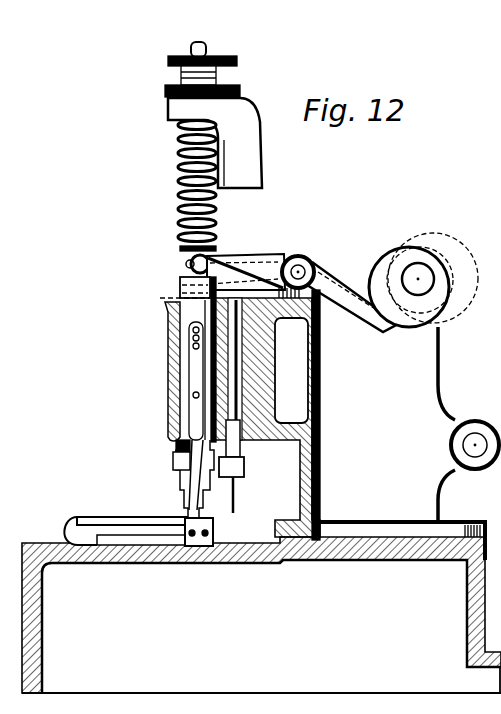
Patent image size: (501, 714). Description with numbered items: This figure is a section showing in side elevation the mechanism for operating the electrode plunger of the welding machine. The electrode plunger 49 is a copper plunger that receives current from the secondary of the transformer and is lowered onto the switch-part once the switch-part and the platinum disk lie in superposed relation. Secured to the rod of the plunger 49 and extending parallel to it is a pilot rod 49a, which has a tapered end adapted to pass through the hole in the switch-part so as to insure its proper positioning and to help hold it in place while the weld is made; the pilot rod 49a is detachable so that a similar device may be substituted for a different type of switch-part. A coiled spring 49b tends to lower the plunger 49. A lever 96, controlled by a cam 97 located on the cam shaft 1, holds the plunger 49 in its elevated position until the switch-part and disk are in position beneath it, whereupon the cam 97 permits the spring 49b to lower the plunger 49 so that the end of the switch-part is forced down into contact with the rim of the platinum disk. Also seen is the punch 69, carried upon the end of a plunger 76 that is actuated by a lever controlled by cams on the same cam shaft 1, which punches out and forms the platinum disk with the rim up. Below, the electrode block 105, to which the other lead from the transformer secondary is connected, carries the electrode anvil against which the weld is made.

The cam shaft 1 is at (414, 270).
The electrode plunger 49 is at (184, 373).
The pilot rod 49a is at (190, 440).
The coiled spring 49b is at (186, 182).
The punch 69 is at (236, 510).
The plunger 76 is at (255, 360).
The lever 96 is at (268, 262).
The cam 97 is at (386, 250).
The electrode block 105 is at (132, 545).